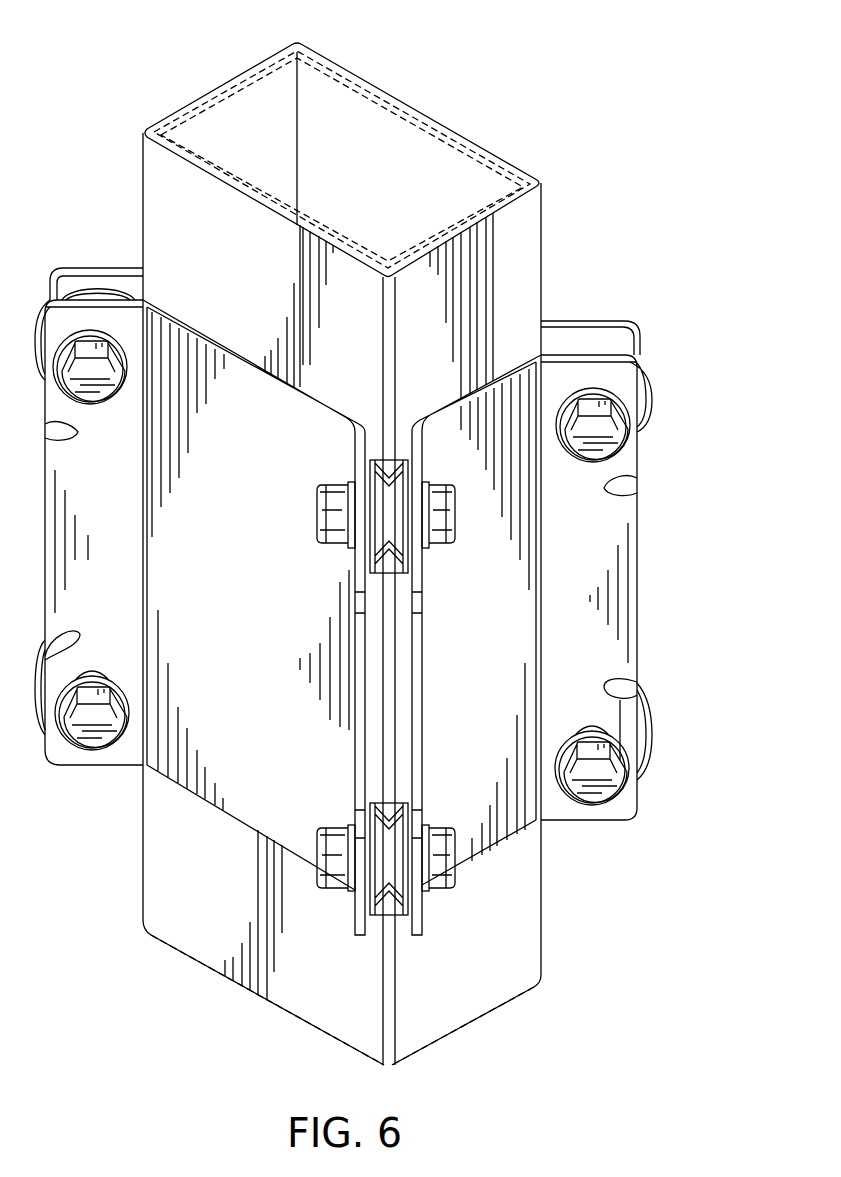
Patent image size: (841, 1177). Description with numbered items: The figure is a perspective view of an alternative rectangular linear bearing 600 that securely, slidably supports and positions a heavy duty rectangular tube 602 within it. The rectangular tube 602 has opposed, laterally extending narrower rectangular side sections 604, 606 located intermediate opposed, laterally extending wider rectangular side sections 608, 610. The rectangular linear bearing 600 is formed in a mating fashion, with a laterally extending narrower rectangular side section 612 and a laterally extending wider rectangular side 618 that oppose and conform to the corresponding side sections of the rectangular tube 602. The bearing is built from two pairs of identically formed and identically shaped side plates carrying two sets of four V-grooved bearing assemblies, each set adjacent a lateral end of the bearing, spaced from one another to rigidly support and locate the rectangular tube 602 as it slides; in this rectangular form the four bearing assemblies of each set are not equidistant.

The rectangular linear bearing 600 is at (640, 562).
The rectangular tube 602 is at (432, 120).
The narrower rectangular side section 604 is at (530, 232).
The narrower rectangular side section 606 is at (240, 123).
The wider rectangular side section 608 is at (183, 197).
The wider rectangular side section 610 is at (378, 133).
The narrower rectangular side section 612 is at (480, 645).
The wider rectangular side 618 is at (243, 755).